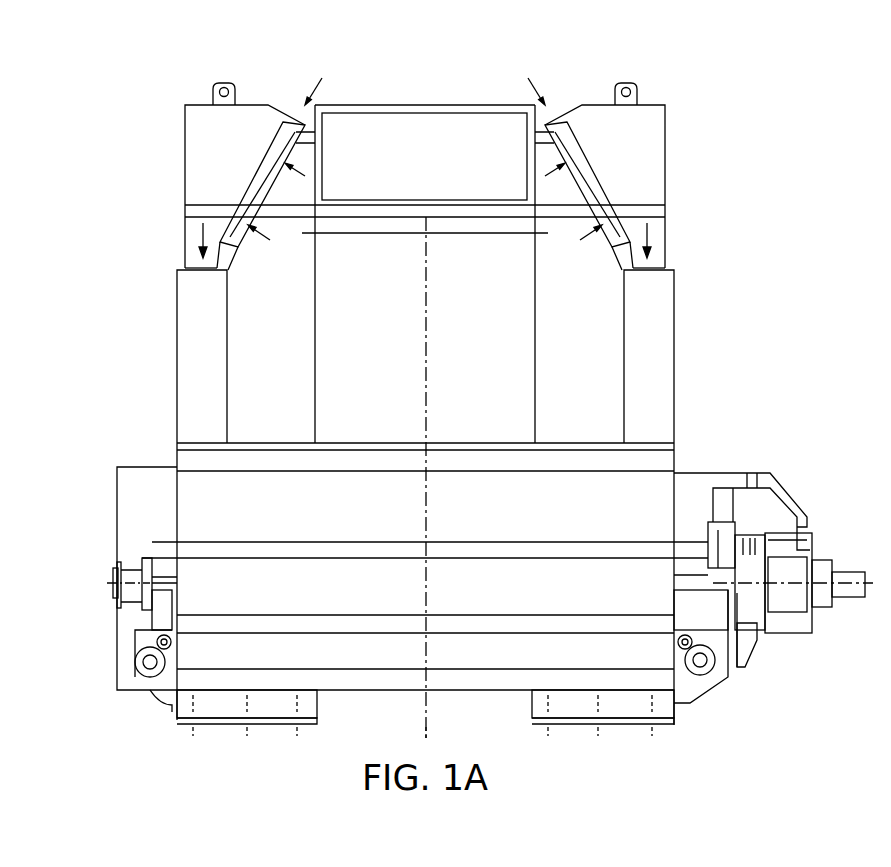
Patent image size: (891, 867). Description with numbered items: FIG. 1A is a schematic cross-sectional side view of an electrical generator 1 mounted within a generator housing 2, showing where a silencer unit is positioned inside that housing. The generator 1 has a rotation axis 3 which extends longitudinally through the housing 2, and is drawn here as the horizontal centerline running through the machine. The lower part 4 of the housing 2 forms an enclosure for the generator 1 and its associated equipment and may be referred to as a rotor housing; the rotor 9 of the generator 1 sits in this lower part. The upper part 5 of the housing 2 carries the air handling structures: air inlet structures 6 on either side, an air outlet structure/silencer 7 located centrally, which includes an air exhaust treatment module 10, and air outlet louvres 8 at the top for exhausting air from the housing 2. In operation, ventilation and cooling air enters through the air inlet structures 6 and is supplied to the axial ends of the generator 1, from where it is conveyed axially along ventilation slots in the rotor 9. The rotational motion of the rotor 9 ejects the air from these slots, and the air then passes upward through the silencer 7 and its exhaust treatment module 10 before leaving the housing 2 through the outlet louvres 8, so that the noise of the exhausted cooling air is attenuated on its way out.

The electrical generator 1 is at (457, 577).
The generator housing 2 is at (674, 378).
The rotation axis 3 is at (800, 577).
The lower part of the housing 4 is at (683, 507).
The upper part of the housing 5 is at (674, 292).
The air inlet structures 6 is at (214, 366).
The air outlet structure/silencer 7 is at (476, 329).
The air outlet louvres 8 is at (412, 132).
The rotor 9 is at (342, 558).
The air exhaust treatment module 10 is at (315, 387).